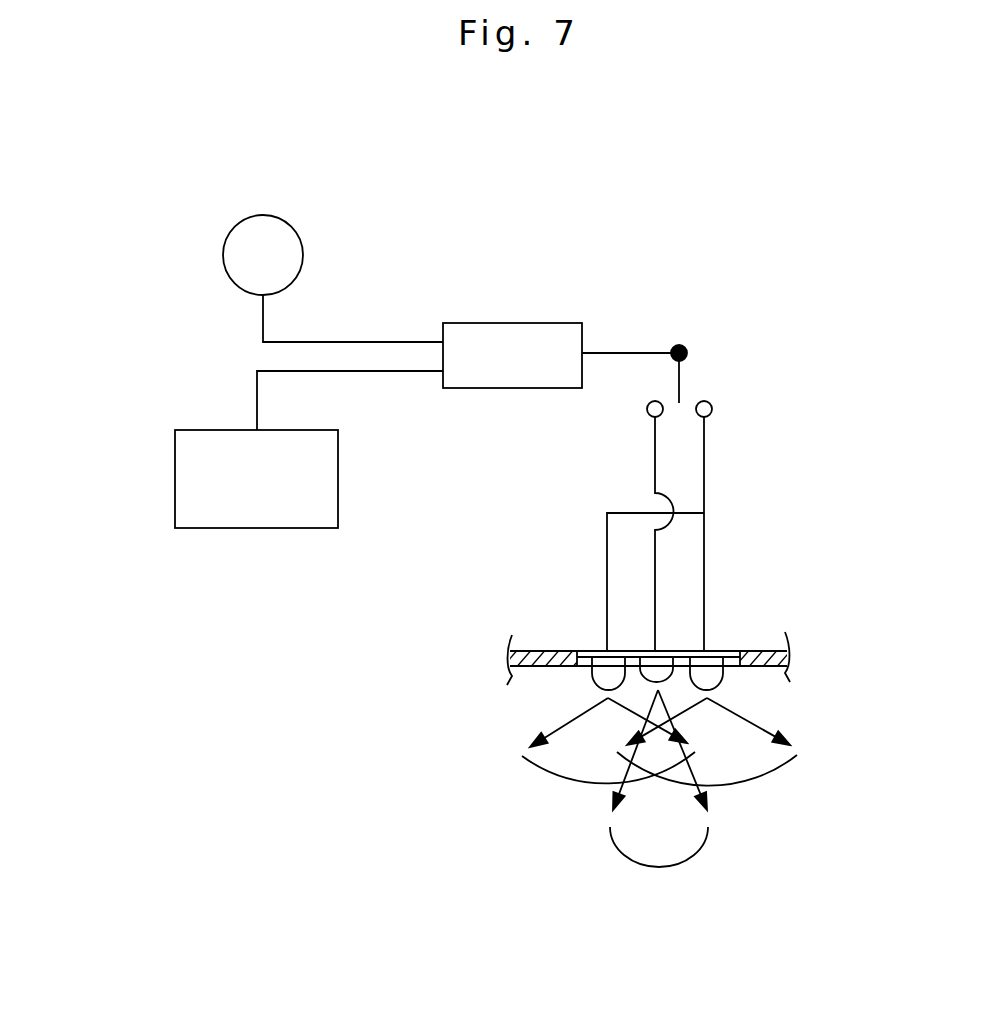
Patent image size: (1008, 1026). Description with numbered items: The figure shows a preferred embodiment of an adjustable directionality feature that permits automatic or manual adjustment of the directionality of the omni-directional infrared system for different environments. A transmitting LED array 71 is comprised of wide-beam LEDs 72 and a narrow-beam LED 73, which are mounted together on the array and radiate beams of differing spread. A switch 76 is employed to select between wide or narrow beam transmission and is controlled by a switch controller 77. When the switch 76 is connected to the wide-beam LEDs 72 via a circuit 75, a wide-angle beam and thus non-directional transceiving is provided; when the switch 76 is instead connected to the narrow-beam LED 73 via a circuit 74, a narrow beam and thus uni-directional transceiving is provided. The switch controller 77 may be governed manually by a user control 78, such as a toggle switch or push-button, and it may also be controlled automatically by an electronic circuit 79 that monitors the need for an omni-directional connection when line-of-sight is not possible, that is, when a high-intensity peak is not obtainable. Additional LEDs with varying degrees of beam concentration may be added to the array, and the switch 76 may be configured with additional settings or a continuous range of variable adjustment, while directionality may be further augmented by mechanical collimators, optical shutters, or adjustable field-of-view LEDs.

The transmitting LED array 71 is at (585, 632).
The wide-beam LEDs 72 is at (802, 636).
The narrow-beam LED 73 is at (777, 616).
The circuit 74 is at (736, 534).
The circuit 75 is at (811, 513).
The switch 76 is at (771, 356).
The switch controller 77 is at (648, 285).
The user control 78 is at (251, 248).
The electronic circuit 79 is at (248, 444).